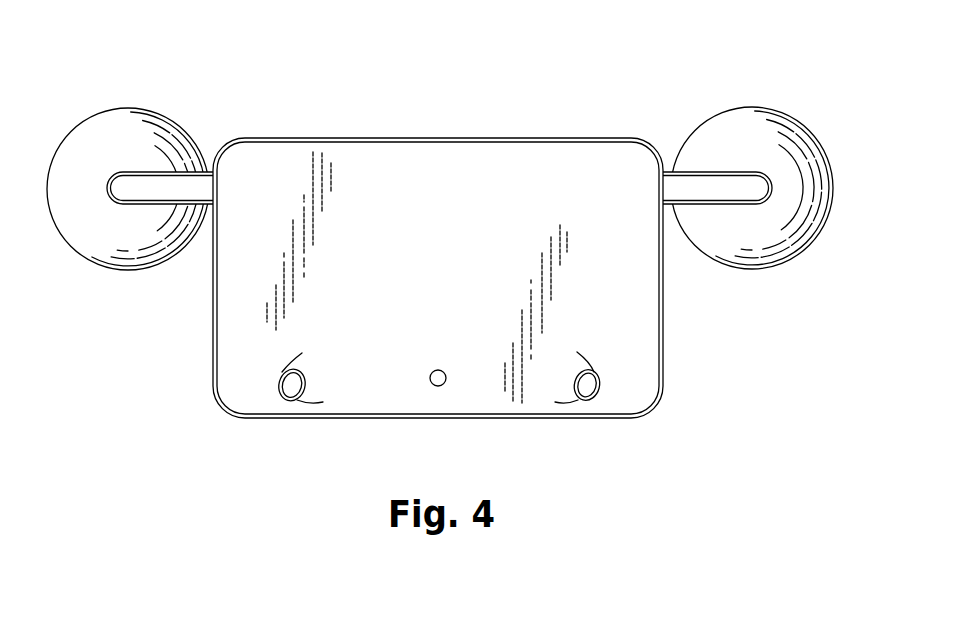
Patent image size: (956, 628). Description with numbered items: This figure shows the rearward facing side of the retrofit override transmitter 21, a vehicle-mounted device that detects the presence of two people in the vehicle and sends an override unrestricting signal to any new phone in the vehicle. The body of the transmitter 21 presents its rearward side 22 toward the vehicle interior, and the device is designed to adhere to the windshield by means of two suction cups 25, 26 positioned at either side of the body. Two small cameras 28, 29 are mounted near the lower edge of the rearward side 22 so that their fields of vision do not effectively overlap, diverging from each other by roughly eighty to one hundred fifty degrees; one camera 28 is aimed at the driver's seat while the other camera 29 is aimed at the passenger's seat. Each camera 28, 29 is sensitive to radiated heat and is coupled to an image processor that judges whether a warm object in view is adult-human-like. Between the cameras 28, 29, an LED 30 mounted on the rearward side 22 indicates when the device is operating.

The override transmitter 21 is at (156, 373).
The rearward side 22 is at (453, 273).
The suction cup 25 is at (88, 132).
The suction cup 26 is at (775, 118).
The camera 28 is at (280, 394).
The camera 29 is at (593, 392).
The LED 30 is at (434, 387).